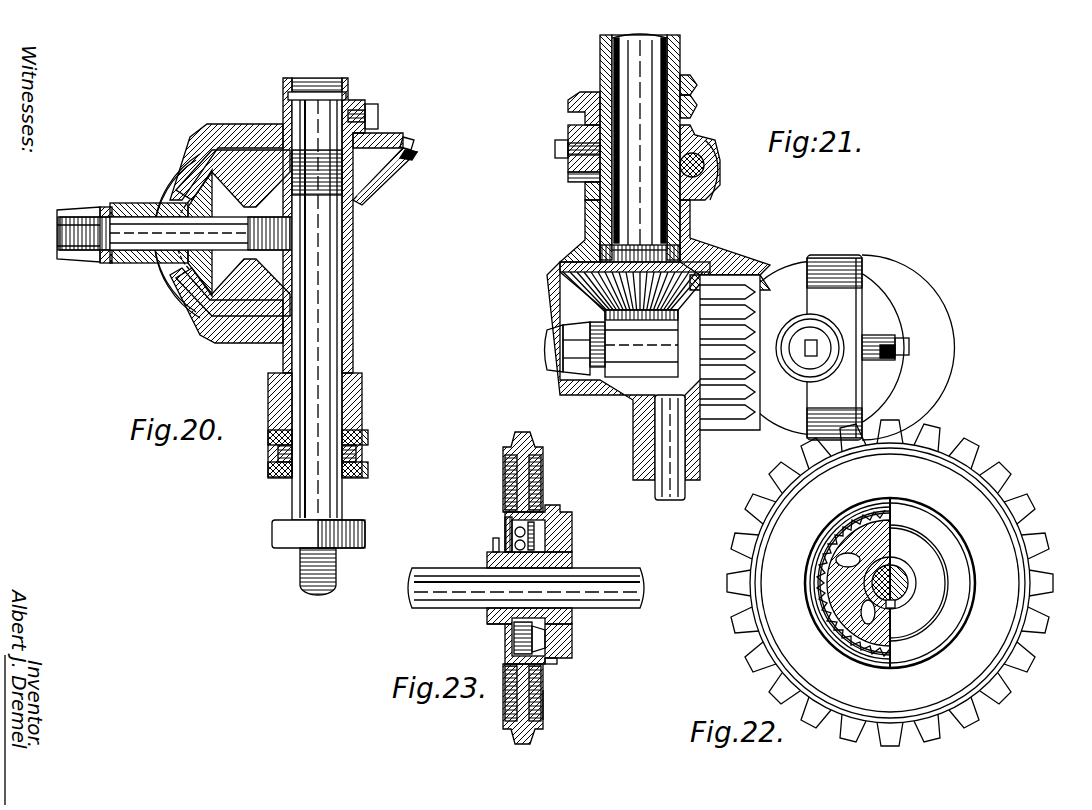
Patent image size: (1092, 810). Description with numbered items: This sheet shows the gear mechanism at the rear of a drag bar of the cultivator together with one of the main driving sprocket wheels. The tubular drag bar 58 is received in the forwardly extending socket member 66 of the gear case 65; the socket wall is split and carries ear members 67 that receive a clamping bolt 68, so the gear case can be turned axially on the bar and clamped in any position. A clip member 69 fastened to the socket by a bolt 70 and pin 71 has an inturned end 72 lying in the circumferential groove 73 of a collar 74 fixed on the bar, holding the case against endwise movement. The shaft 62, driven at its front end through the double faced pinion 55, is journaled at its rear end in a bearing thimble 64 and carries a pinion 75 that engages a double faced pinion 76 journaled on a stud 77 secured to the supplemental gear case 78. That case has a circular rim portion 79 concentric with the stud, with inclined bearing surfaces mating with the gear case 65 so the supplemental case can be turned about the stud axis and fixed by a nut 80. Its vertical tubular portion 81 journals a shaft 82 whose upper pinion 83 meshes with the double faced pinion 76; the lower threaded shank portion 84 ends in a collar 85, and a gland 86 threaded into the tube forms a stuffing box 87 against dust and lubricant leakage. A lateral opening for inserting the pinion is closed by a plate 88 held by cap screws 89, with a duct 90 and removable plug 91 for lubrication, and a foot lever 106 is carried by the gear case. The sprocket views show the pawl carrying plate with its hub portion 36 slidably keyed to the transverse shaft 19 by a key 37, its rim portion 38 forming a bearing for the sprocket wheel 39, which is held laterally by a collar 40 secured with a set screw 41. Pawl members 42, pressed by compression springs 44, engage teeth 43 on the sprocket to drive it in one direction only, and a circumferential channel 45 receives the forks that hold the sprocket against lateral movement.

In FIG. 23, the transverse shaft 19 is at (622, 608).
In FIG. 22, the transverse shaft 19 is at (900, 578).
In FIG. 23, the hub portion 36 is at (488, 620).
In FIG. 22, the hub portion 36 is at (830, 626).
In FIG. 23, the key 37 is at (570, 612).
In FIG. 22, the key 37 is at (905, 598).
In FIG. 23, the rim portion 38 is at (566, 522).
In FIG. 22, the rim portion 38 is at (950, 545).
In FIG. 23, the sprocket wheel 39 is at (543, 708).
In FIG. 22, the sprocket wheel 39 is at (978, 700).
In FIG. 23, the collar 40 is at (498, 640).
In FIG. 23, the set screw 41 is at (494, 540).
In FIG. 23, the pawl member 42 is at (540, 518).
In FIG. 22, the pawl member 42 is at (838, 565).
In FIG. 23, the teeth 43 is at (505, 512).
In FIG. 22, the teeth 43 is at (845, 530).
In FIG. 23, the compression spring 44 is at (490, 550).
In FIG. 22, the compression spring 44 is at (880, 540).
In FIG. 23, the circumferential channel 45 is at (556, 666).
In FIG. 23, the double faced pinion 55 is at (570, 548).
In FIG. 22, the double faced pinion 55 is at (862, 663).
In FIG. 21, the tubular drag bar 58 is at (602, 62).
In FIG. 21, the shaft 62 is at (588, 208).
In FIG. 21, the bearing thimble 64 is at (690, 142).
In FIG. 20, the gear case 65 is at (112, 300).
In FIG. 21, the gear case 65 is at (550, 280).
In FIG. 21, the socket member 66 is at (585, 192).
In FIG. 21, the ear member 67 is at (716, 178).
In FIG. 21, the clamping bolt 68 is at (704, 162).
In FIG. 21, the clip member 69 is at (568, 128).
In FIG. 21, the bolt 70 is at (555, 150).
In FIG. 21, the pin 71 is at (568, 177).
In FIG. 21, the inturned end 72 is at (578, 92).
In FIG. 21, the circumferential groove 73 is at (695, 108).
In FIG. 21, the collar 74 is at (694, 90).
In FIG. 21, the pinion 75 is at (580, 298).
In FIG. 20, the double faced pinion 76 is at (200, 285).
In FIG. 21, the double faced pinion 76 is at (745, 275).
In FIG. 20, the stud 77 is at (58, 255).
In FIG. 21, the stud 77 is at (548, 350).
In FIG. 20, the supplemental gear case 78 is at (270, 345).
In FIG. 21, the supplemental gear case 78 is at (735, 256).
In FIG. 20, the circular rim portion 79 is at (262, 117).
In FIG. 21, the circular rim portion 79 is at (770, 270).
In FIG. 20, the nut 80 is at (60, 226).
In FIG. 21, the nut 80 is at (575, 330).
In FIG. 20, the tubular portion 81 is at (352, 326).
In FIG. 20, the shaft 82 is at (352, 278).
In FIG. 21, the shaft 82 is at (790, 352).
In FIG. 20, the pinion 83 is at (385, 140).
In FIG. 21, the pinion 83 is at (790, 410).
In FIG. 20, the threaded shank portion 84 is at (300, 560).
In FIG. 20, the collar 85 is at (272, 534).
In FIG. 20, the gland 86 is at (270, 470).
In FIG. 20, the stuffing box 87 is at (278, 396).
In FIG. 20, the plate 88 is at (400, 180).
In FIG. 21, the plate 88 is at (880, 290).
In FIG. 20, the cap screw 89 is at (374, 108).
In FIG. 21, the cap screw 89 is at (885, 340).
In FIG. 20, the duct 90 is at (414, 155).
In FIG. 21, the duct 90 is at (900, 360).
In FIG. 20, the removable plug 91 is at (414, 142).
In FIG. 21, the removable plug 91 is at (910, 346).
In FIG. 21, the foot lever 106 is at (660, 450).